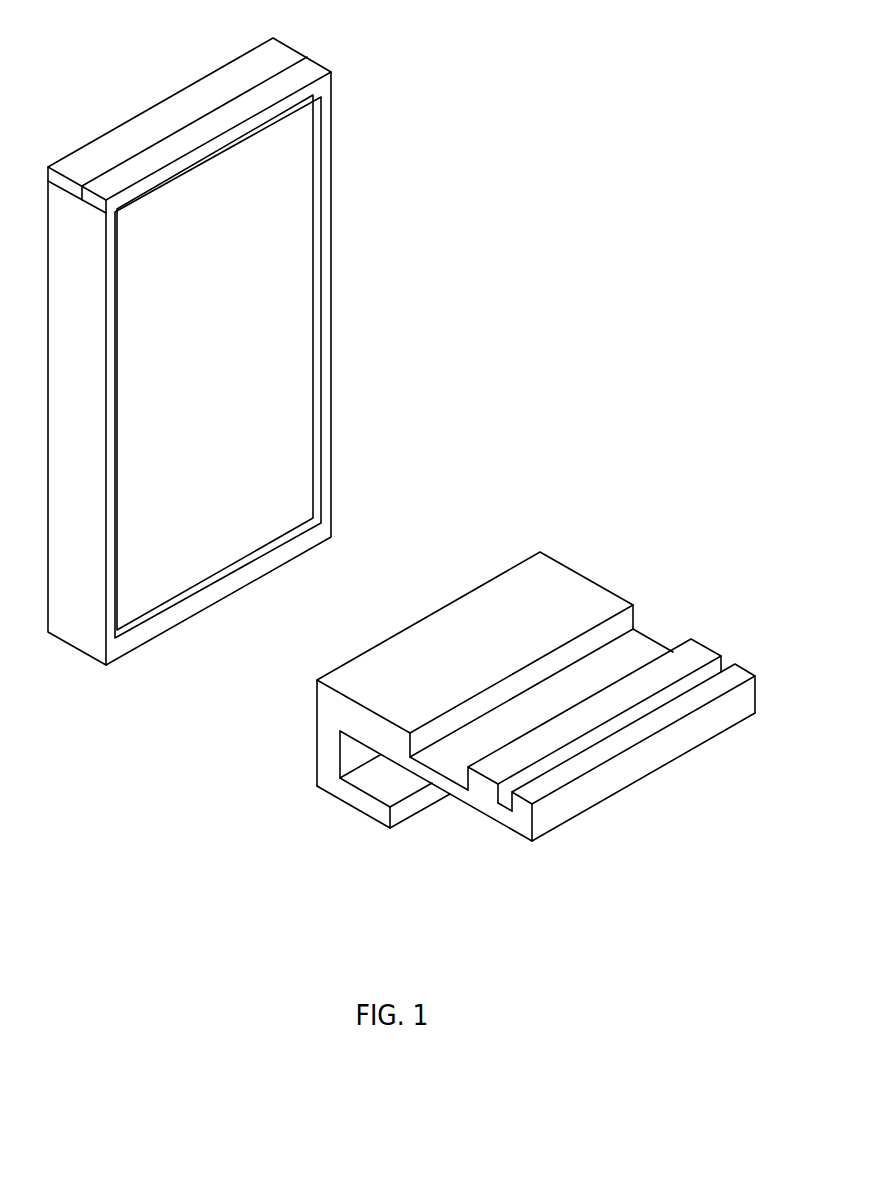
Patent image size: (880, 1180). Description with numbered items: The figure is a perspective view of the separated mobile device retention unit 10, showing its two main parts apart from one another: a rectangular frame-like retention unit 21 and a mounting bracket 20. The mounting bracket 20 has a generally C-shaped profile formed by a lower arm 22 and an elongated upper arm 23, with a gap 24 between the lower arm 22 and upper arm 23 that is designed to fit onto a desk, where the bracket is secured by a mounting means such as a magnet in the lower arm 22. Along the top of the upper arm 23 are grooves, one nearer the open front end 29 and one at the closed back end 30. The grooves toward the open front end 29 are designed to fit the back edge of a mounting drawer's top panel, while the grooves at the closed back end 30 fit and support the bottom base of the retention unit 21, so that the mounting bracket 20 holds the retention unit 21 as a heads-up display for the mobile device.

The mobile device retention unit 10 is at (118, 58).
The retention unit 21 is at (268, 282).
The mounting bracket 20 is at (356, 674).
The closed back end 30 is at (650, 625).
The open front end 29 is at (732, 655).
The upper arm 23 is at (745, 697).
The lower arm 22 is at (363, 803).
The gap 24 is at (383, 777).